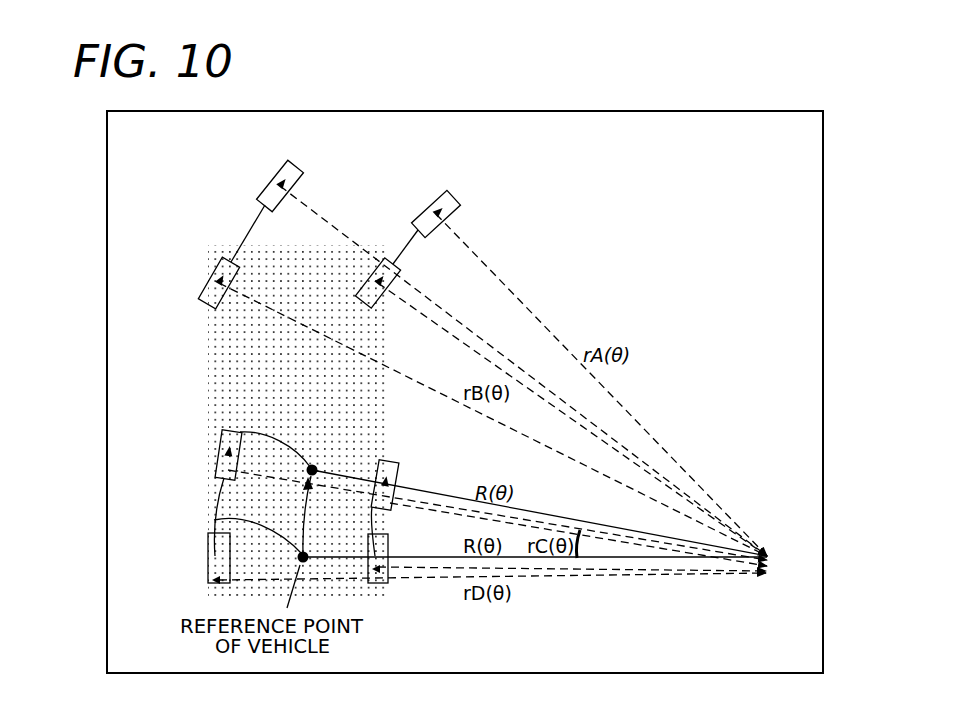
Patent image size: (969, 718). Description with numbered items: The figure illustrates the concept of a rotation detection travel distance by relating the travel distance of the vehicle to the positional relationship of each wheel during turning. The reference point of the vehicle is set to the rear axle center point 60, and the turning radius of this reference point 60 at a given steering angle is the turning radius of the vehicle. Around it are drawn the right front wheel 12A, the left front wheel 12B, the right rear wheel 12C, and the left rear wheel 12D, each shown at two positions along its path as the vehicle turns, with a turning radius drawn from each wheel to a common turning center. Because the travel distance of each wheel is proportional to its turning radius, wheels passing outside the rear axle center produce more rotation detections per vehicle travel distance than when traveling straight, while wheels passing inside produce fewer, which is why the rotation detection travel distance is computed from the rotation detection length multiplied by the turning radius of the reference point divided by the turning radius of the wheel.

The right front wheel 12A is at (458, 210).
The left front wheel 12B is at (267, 183).
The right rear wheel 12C is at (398, 462).
The left rear wheel 12D is at (217, 467).
The rear axle center point 60 is at (226, 437).